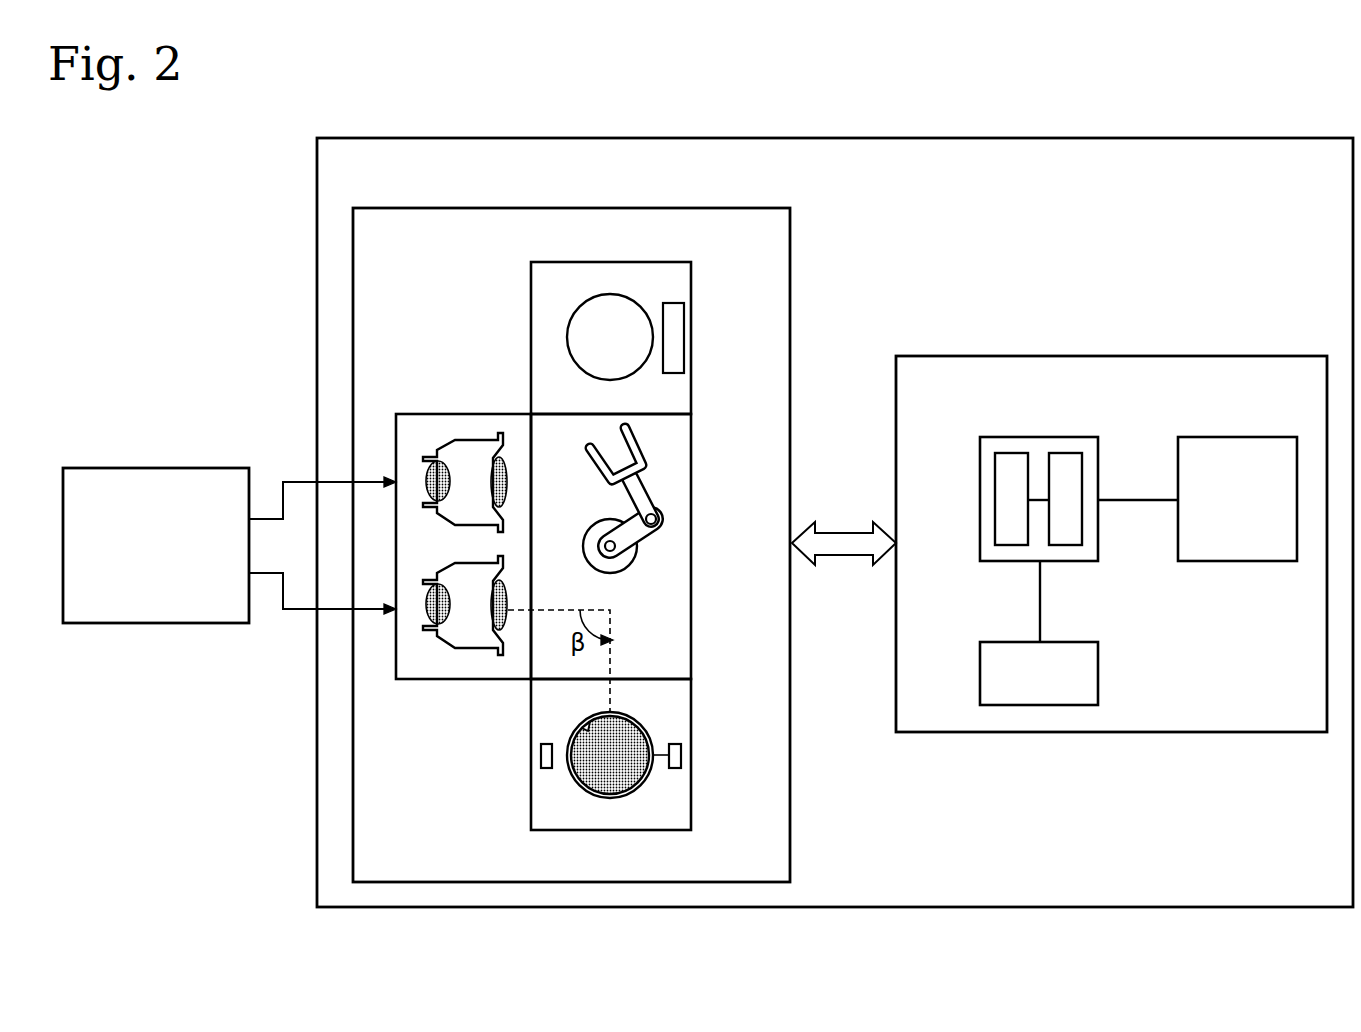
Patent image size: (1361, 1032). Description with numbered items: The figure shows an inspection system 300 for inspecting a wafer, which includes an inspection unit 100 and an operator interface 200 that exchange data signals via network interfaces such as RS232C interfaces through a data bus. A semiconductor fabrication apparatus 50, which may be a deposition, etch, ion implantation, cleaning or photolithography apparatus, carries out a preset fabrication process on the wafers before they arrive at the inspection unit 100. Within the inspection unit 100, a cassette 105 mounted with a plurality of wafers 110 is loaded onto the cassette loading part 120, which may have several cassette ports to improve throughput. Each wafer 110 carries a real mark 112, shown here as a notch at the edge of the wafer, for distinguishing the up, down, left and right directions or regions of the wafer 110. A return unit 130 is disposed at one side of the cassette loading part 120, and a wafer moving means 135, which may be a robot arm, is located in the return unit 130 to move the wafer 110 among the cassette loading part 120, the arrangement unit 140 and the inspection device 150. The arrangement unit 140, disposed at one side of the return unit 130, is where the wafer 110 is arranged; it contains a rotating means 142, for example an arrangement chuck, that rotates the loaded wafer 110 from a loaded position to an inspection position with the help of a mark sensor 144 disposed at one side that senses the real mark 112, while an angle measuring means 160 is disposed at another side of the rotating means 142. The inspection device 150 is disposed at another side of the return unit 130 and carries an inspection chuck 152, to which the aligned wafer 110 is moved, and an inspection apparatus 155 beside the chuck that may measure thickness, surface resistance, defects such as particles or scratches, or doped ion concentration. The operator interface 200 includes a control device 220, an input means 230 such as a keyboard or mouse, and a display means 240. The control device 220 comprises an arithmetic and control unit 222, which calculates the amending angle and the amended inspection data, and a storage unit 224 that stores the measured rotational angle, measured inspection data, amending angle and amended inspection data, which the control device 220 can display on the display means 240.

The inspection system 300 is at (1015, 138).
The inspection unit 100 is at (675, 208).
The operator interface 200 is at (1212, 356).
The semiconductor fabrication apparatus 50 is at (185, 468).
The cassette 105 is at (450, 452).
The cassette loading part 120 is at (468, 414).
The inspection device 150 is at (691, 280).
The inspection chuck 152 is at (577, 309).
The inspection apparatus 155 is at (673, 336).
The return unit 130 is at (691, 600).
The wafer moving means 135 is at (648, 532).
The arrangement unit 140 is at (691, 708).
The rotating means 142 is at (590, 790).
The mark sensor 144 is at (541, 755).
The angle measuring means 160 is at (681, 755).
The wafer 110 is at (628, 778).
The real mark 112 is at (585, 730).
The control device 220 is at (1040, 437).
The arithmetic and control unit 222 is at (995, 531).
The storage unit 224 is at (1082, 531).
The input means 230 is at (1098, 672).
The display means 240 is at (1237, 437).